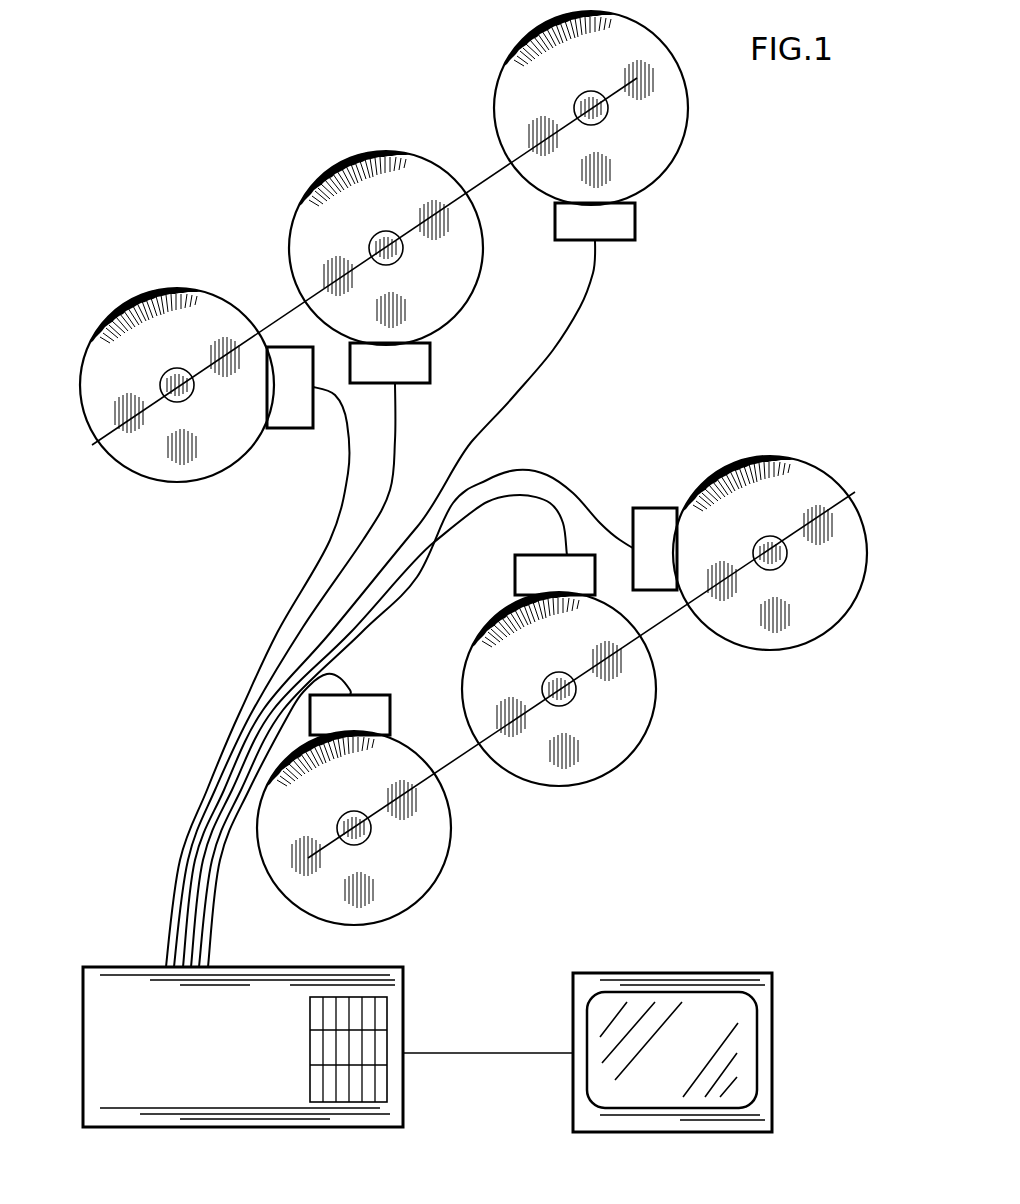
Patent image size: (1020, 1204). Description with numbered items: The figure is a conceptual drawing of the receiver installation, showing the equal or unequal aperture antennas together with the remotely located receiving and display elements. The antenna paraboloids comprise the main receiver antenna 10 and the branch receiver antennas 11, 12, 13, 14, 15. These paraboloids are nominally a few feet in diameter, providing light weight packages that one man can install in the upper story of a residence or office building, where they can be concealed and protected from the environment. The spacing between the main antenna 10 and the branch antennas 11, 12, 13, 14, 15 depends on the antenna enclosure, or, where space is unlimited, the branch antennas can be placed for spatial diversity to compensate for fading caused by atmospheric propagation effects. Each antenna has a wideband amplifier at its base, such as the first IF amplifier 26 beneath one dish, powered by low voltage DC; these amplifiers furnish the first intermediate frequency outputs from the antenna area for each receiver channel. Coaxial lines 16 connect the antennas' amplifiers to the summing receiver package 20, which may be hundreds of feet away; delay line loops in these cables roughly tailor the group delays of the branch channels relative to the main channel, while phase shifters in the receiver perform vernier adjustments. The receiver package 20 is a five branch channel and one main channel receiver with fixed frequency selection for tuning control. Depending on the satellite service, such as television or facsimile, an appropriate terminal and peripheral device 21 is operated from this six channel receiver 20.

The main receiver antenna 10 is at (358, 248).
The branch receiver antenna 11 is at (551, 125).
The branch receiver antenna 12 is at (750, 530).
The branch receiver antenna 13 is at (590, 670).
The branch receiver antenna 14 is at (377, 810).
The branch receiver antenna 15 is at (196, 404).
The coaxial lines 16 is at (390, 603).
The receiver package 20 is at (251, 1028).
The terminal and peripheral device 21 is at (672, 1055).
The first IF amplifier 26 is at (423, 365).